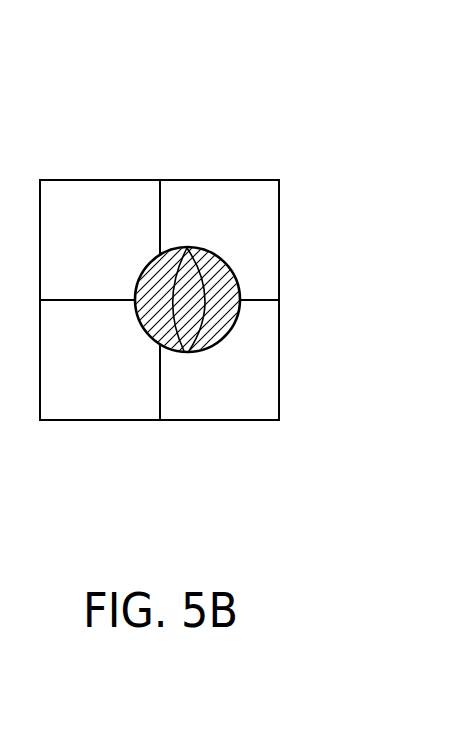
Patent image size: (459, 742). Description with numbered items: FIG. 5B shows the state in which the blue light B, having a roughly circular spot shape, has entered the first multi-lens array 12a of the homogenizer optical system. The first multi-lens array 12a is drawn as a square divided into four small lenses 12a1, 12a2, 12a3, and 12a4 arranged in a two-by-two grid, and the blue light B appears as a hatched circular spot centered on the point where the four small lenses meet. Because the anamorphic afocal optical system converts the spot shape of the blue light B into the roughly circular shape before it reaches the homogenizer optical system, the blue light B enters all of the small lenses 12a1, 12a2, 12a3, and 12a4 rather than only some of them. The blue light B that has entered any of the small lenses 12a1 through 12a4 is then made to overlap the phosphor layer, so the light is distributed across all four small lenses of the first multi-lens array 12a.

The first multi-lens array 12a is at (279, 167).
The small lens 12a1 is at (63, 202).
The small lens 12a2 is at (217, 200).
The small lens 12a3 is at (65, 405).
The small lens 12a4 is at (212, 405).
The blue light B is at (236, 273).